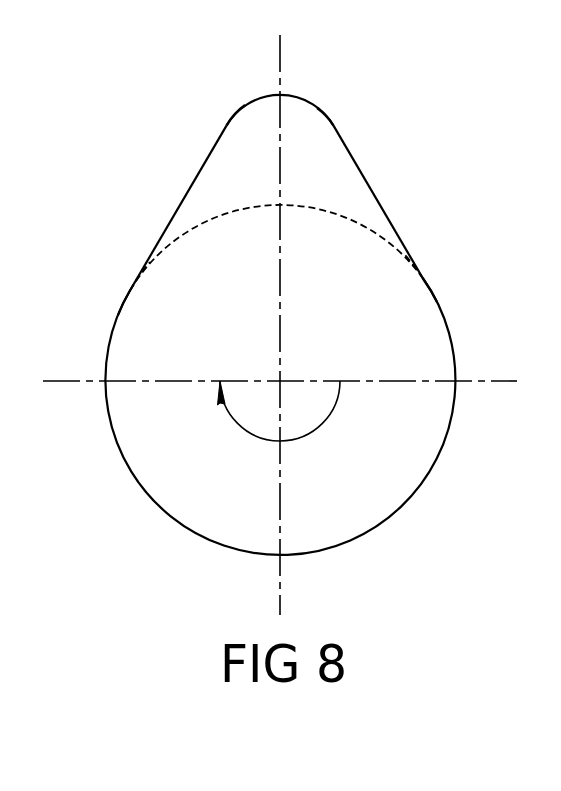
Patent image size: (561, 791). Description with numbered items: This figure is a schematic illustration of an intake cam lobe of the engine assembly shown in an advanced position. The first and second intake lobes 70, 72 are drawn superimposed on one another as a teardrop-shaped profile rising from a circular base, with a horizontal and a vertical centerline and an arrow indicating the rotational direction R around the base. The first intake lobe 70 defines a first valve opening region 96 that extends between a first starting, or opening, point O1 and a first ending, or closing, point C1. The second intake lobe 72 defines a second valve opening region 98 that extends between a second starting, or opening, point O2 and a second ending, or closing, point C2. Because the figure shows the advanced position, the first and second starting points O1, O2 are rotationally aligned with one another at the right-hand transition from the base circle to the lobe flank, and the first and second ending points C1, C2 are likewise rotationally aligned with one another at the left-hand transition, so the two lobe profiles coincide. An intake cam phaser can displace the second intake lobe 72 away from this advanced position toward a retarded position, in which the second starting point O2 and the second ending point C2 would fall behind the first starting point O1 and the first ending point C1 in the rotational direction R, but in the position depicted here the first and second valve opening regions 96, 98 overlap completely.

The first intake lobe 70 is at (197, 177).
The second intake lobe 72 is at (354, 157).
The first valve opening region 96 is at (245, 105).
The second valve opening region 98 is at (317, 108).
The first ending (closing) point C1 is at (130, 290).
The second ending (closing) point C2 is at (133, 272).
The first starting (opening) point O1 is at (423, 278).
The second starting (opening) point O2 is at (423, 278).
The rotational direction R is at (318, 427).